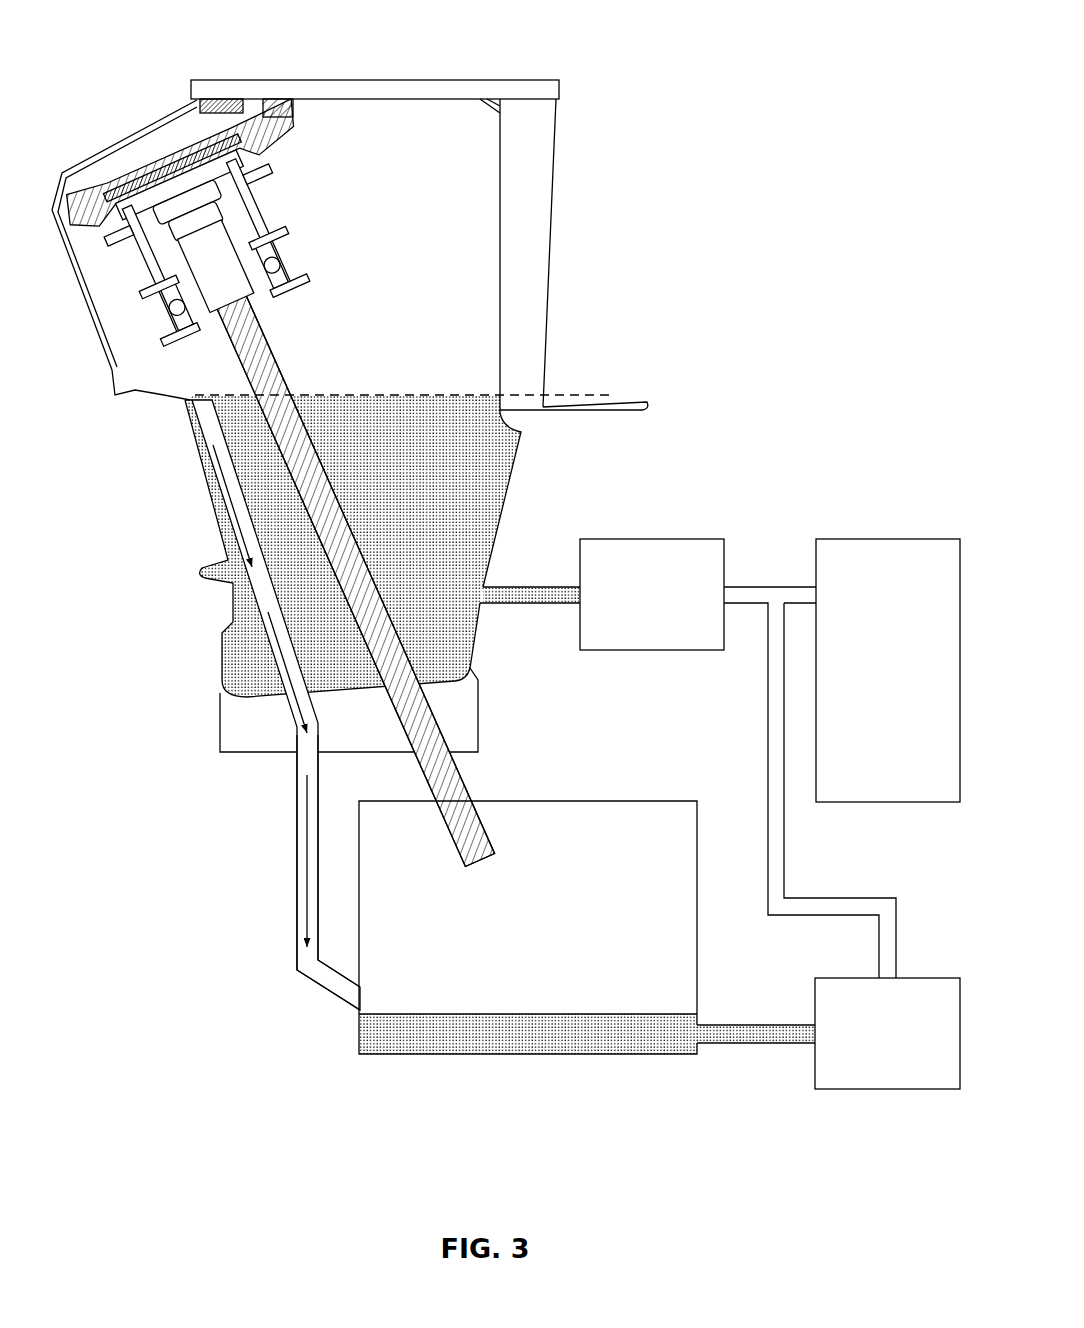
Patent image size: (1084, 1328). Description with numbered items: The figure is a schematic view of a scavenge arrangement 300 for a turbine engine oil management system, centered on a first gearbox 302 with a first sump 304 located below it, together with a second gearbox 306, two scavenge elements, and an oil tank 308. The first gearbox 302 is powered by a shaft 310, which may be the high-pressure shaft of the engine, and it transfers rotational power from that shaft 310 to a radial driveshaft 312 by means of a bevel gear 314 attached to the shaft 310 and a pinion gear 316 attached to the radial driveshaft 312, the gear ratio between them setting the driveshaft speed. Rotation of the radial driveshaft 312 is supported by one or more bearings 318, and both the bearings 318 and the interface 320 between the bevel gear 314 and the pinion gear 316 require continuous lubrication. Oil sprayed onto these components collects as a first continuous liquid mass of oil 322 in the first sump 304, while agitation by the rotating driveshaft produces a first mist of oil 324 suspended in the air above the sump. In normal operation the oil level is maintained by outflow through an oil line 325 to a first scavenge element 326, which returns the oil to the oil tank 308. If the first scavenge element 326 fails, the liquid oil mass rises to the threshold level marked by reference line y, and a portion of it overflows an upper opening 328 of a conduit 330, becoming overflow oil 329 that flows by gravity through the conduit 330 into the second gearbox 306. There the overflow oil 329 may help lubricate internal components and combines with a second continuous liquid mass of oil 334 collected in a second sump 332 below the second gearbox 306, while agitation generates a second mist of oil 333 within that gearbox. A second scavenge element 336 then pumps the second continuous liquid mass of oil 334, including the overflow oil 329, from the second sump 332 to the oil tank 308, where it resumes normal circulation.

The scavenge arrangement 300 is at (130, 28).
The first gearbox 302 is at (82, 130).
The first sump 304 is at (468, 390).
The second gearbox 306 is at (587, 939).
The oil tank 308 is at (888, 539).
The shaft 310 is at (385, 80).
The radial driveshaft 312 is at (473, 783).
The bevel gear 314 is at (300, 113).
The pinion gear 316 is at (262, 130).
The bearings 318 is at (290, 258).
The interface 320 is at (300, 135).
The first continuous liquid mass of oil 322 is at (487, 478).
The first mist of oil 324 is at (450, 122).
The oil line 325 is at (540, 606).
The first scavenge element 326 is at (652, 539).
The upper opening 328 is at (197, 400).
The overflow oil 329 is at (232, 505).
The conduit 330 is at (297, 790).
The second sump 332 is at (678, 1005).
The second mist of oil 333 is at (683, 934).
The second continuous liquid mass of oil 334 is at (673, 1040).
The second scavenge element 336 is at (888, 1090).